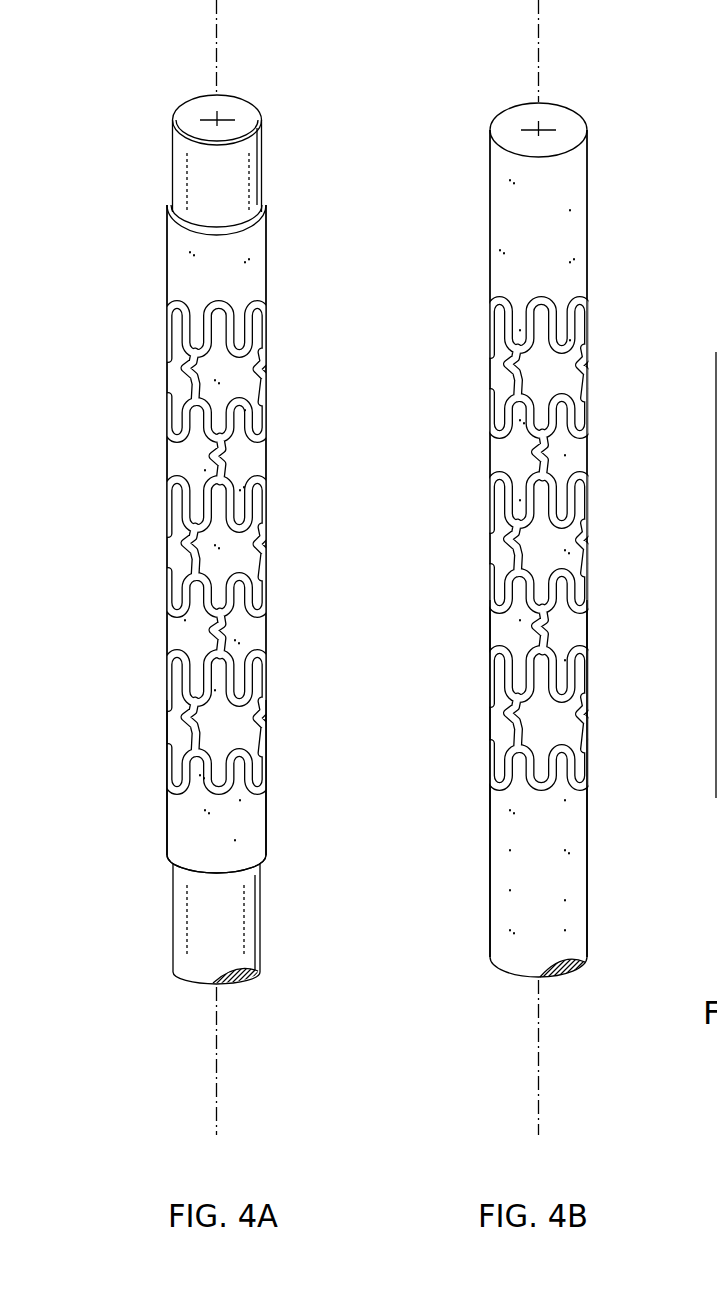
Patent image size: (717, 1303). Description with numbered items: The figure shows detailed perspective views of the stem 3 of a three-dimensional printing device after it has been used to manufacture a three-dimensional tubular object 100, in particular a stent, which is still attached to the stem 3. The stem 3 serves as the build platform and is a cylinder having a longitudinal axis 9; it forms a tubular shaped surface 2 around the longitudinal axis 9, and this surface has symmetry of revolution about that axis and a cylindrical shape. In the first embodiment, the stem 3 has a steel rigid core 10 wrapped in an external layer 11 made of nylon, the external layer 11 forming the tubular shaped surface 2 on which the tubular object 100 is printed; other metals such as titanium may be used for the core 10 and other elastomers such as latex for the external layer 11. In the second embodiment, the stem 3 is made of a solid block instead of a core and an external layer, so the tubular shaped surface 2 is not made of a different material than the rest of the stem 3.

In FIG. 4A, the tubular shaped surface 2 is at (167, 465).
In FIG. 4B, the tubular shaped surface 2 is at (489, 726).
In FIG. 4A, the stem 3 is at (265, 159).
In FIG. 4B, the stem 3 is at (593, 170).
In FIG. 4A, the longitudinal axis 9 is at (224, 10).
In FIG. 4B, the longitudinal axis 9 is at (546, 10).
In FIG. 4A, the rigid core 10 is at (258, 912).
In FIG. 4A, the external layer 11 is at (167, 818).
In FIG. 4A, the 3D tubular object 100 is at (250, 395).
In FIG. 4B, the 3D tubular object 100 is at (540, 312).